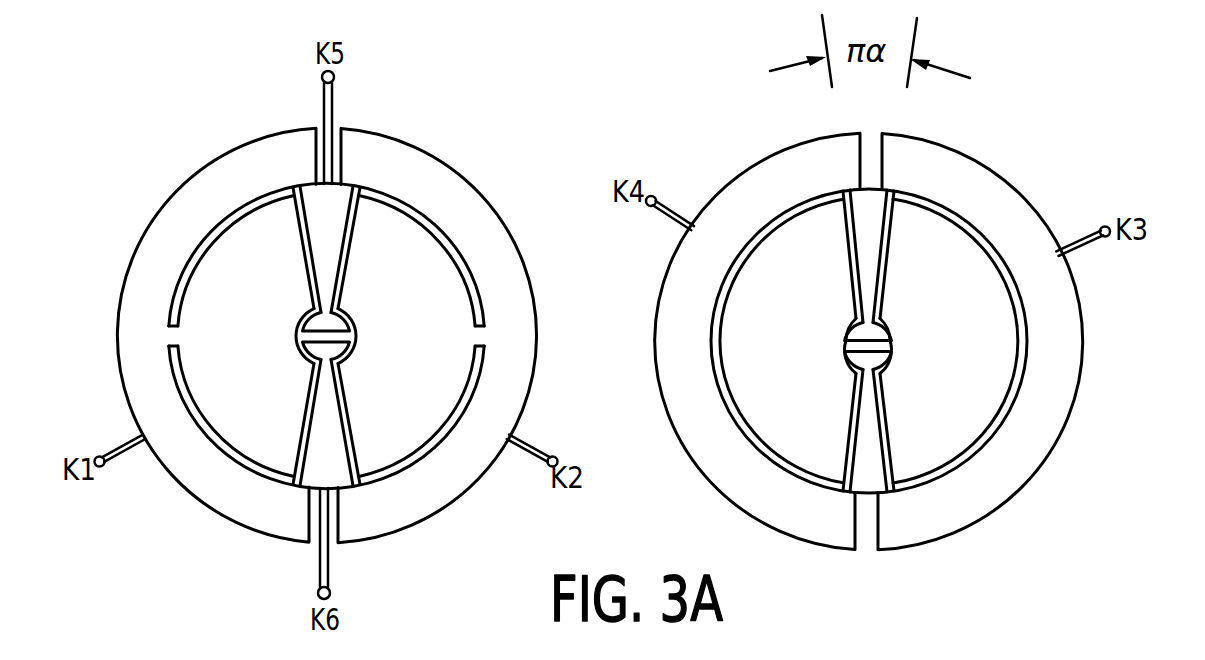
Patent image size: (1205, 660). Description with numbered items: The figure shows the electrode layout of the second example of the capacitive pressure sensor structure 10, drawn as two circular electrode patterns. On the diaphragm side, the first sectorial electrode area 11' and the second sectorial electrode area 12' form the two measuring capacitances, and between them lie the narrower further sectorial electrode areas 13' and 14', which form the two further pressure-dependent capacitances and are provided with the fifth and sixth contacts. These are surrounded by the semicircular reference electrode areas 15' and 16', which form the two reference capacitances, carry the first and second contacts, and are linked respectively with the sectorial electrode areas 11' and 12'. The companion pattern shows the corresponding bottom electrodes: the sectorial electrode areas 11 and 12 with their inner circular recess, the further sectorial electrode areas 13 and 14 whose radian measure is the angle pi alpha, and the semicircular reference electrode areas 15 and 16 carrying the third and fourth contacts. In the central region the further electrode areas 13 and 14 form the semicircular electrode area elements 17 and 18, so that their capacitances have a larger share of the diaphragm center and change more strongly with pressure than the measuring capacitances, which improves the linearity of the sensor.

The pressure sensor structure 10 is at (890, 312).
The first sectorial electrode area 11 is at (755, 297).
The first sectorial electrode area (diaphragm side) 11' is at (182, 334).
The second sectorial electrode area 12 is at (1006, 325).
The second sectorial electrode area (diaphragm side) 12' is at (471, 324).
The first further sectorial electrode area 13 is at (966, 228).
The first further sectorial electrode area (diaphragm side) 13' is at (369, 186).
The second further sectorial electrode area 14 is at (999, 433).
The second further sectorial electrode area (diaphragm side) 14' is at (264, 470).
The second reference electrode area 15 is at (733, 341).
The second reference electrode area (diaphragm side) 15' is at (180, 335).
The first reference electrode area 16 is at (1026, 341).
The first reference electrode area (diaphragm side) 16' is at (471, 336).
The semicircular electrode area element 17 is at (882, 330).
The semicircular electrode area element 18 is at (878, 357).